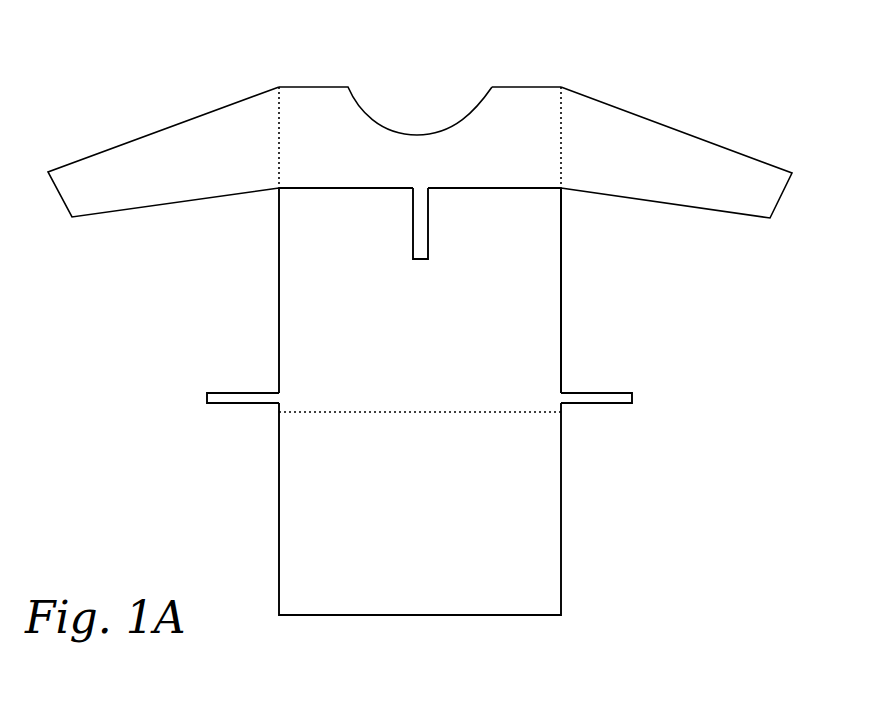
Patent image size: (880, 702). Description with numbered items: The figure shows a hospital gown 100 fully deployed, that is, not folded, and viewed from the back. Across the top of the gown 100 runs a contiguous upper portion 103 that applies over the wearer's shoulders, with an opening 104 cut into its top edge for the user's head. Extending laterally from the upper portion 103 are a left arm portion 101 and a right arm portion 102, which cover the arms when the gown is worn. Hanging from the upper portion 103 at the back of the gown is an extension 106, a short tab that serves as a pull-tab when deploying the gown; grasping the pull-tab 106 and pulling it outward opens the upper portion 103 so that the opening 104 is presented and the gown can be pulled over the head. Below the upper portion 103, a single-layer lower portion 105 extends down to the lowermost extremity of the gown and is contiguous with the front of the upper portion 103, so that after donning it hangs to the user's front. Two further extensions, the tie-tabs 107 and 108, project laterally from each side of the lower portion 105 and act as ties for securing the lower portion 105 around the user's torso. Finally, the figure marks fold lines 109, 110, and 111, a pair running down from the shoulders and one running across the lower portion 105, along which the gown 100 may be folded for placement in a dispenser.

The hospital gown 100 is at (205, 279).
The left arm portion 101 is at (164, 130).
The right arm portion 102 is at (669, 128).
The upper portion 103 is at (508, 103).
The opening 104 is at (407, 103).
The lower portion 105 is at (562, 249).
The extension (pull-tab) 106 is at (412, 222).
The tie-tab 107 is at (250, 403).
The tie-tab 108 is at (593, 403).
The fold line 109 is at (278, 114).
The fold line 110 is at (563, 125).
The fold line 111 is at (398, 412).